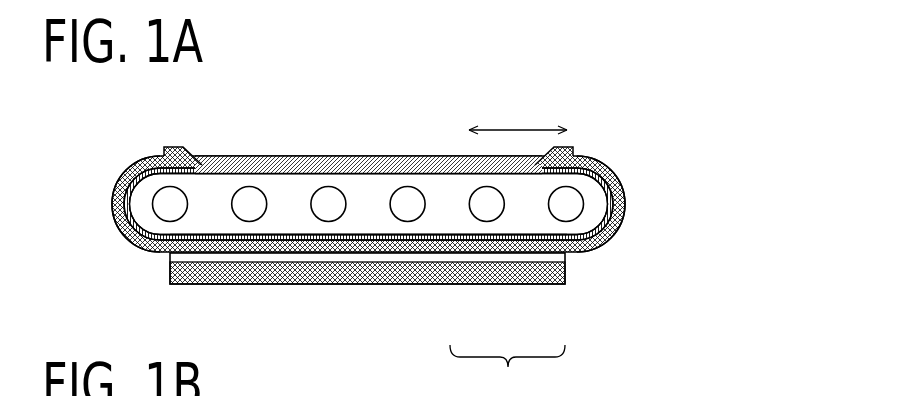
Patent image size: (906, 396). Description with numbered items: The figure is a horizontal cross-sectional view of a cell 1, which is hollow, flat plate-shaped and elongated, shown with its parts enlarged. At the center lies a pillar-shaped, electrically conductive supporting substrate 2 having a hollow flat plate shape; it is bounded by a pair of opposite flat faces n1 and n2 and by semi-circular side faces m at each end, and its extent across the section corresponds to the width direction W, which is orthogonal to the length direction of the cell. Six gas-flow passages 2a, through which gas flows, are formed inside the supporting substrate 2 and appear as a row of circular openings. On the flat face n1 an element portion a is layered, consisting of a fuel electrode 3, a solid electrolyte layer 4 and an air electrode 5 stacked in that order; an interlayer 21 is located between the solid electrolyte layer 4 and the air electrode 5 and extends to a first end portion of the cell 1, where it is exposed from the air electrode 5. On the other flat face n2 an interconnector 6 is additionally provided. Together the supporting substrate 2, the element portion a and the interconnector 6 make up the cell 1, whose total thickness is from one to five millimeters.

The cell 1 is at (603, 122).
The supporting substrate 2 is at (283, 220).
The gas-flow passages 2a is at (318, 203).
The interlayer 21 is at (418, 257).
The fuel electrode 3 is at (560, 237).
The solid electrolyte layer 4 is at (519, 248).
The air electrode 5 is at (487, 270).
The interconnector 6 is at (358, 168).
The flat face n1 is at (355, 238).
The flat face n2 is at (443, 175).
The semi-circular side faces m is at (625, 210).
The width direction W is at (518, 117).
The element portion a is at (507, 370).